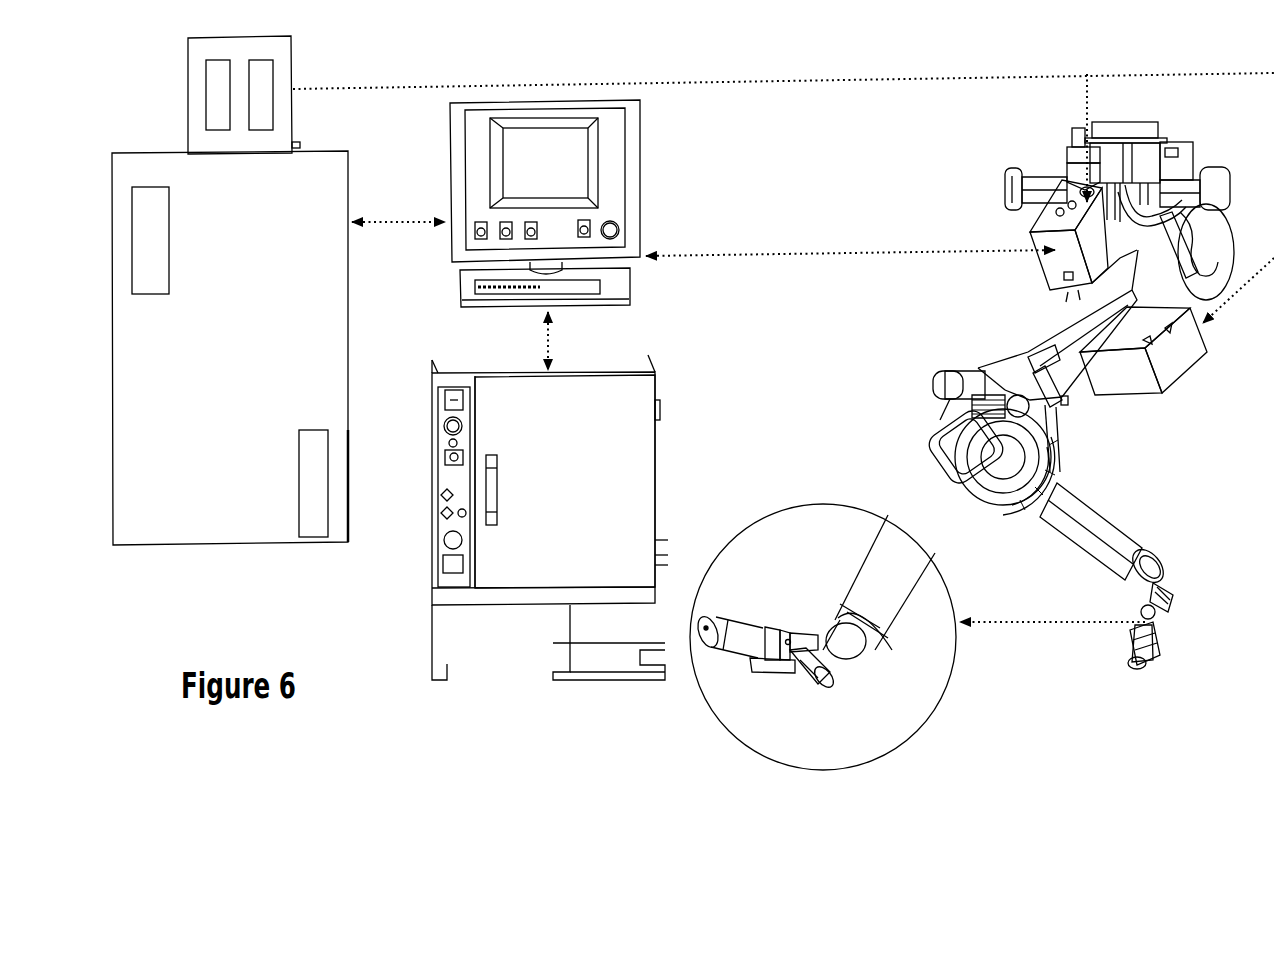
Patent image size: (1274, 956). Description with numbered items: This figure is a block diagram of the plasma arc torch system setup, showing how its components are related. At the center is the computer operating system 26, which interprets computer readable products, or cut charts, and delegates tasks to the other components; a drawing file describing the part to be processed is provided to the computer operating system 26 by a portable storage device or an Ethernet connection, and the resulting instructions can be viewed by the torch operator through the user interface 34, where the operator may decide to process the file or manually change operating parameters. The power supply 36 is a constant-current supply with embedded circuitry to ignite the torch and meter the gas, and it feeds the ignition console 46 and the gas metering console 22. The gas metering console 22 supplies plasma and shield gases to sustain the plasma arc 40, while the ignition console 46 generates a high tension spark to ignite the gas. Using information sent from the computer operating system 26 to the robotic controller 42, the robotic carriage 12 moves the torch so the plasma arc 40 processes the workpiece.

The robotic carriage 12 is at (1099, 421).
The gas metering console 22 is at (1180, 356).
The computer operating system 26 is at (572, 203).
The user interface 34 is at (540, 162).
The power supply 36 is at (298, 67).
The plasma arc 40 is at (1128, 660).
The robotic controller 42 is at (430, 588).
The ignition console 46 is at (1060, 272).